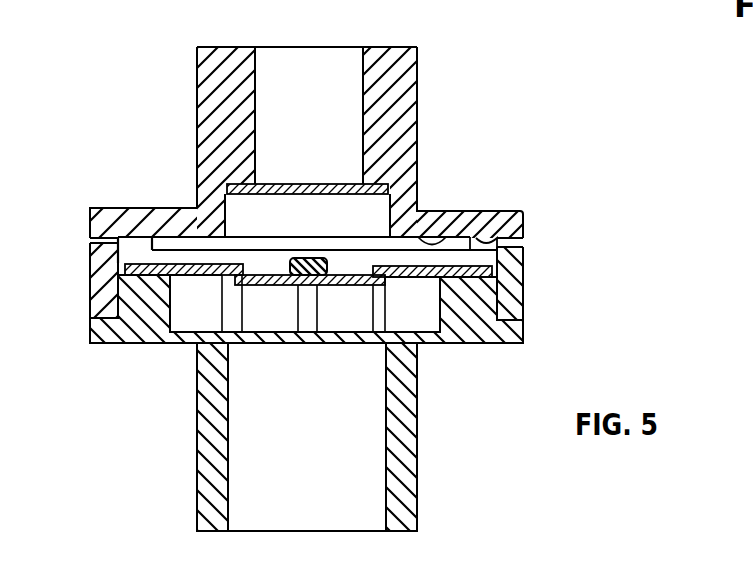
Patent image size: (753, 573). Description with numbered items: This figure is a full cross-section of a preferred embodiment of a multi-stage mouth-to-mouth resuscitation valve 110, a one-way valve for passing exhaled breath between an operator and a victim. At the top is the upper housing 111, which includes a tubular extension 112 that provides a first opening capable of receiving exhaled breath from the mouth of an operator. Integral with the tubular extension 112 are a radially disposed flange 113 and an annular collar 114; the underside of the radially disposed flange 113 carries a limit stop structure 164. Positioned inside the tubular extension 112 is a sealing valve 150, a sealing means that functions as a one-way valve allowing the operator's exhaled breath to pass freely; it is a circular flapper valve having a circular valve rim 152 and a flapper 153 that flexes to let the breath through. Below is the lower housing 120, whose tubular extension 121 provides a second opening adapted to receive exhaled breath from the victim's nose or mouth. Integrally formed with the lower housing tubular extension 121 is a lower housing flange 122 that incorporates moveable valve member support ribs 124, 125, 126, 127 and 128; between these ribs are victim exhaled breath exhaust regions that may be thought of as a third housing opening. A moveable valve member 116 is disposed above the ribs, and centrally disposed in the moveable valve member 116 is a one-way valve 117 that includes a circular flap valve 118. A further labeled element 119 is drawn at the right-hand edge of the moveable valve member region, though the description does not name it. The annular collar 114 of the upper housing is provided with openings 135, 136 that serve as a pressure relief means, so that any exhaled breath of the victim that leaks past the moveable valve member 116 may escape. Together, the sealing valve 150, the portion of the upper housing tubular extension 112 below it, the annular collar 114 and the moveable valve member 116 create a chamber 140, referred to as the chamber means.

The multi-stage mouth-to-mouth resuscitation valve 110 is at (313, 270).
The upper housing 111 is at (306, 124).
The tubular extension 112 is at (418, 58).
The radially disposed flange 113 is at (143, 207).
The annular collar 114 is at (92, 285).
The moveable valve member 116 is at (178, 266).
The one-way valve 117 is at (313, 254).
The circular flap valve 118 is at (346, 310).
The diaphragm bead 119 is at (424, 243).
The lower housing 120 is at (355, 437).
The tubular extension 121 is at (417, 500).
The lower housing flange 122 is at (314, 347).
The moveable valve member support rib 124 is at (483, 298).
The moveable valve member support rib 125 is at (380, 320).
The moveable valve member support rib 126 is at (295, 322).
The moveable valve member support rib 127 is at (240, 322).
The moveable valve member support rib 128 is at (130, 300).
The opening 135 is at (84, 238).
The opening 136 is at (534, 245).
The chamber 140 is at (378, 226).
The sealing valve 150 is at (307, 134).
The circular valve rim 152 is at (231, 198).
The flapper 153 is at (295, 186).
The limit stop structure 164 is at (500, 235).